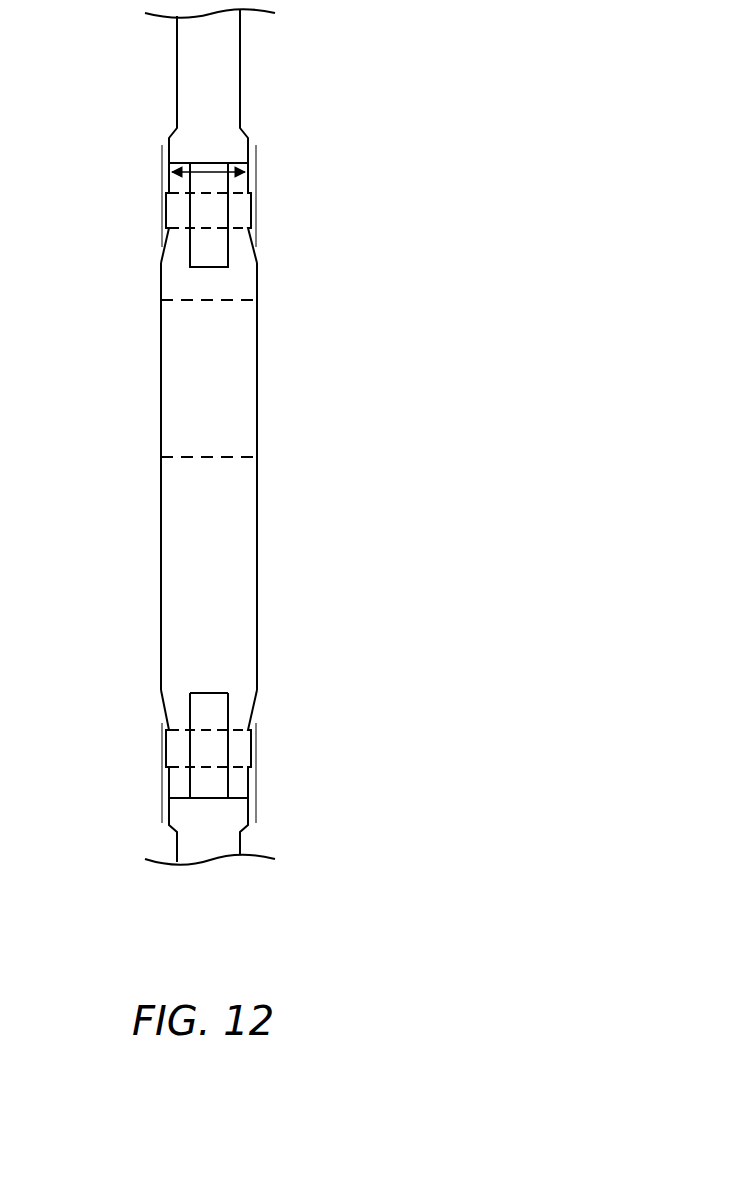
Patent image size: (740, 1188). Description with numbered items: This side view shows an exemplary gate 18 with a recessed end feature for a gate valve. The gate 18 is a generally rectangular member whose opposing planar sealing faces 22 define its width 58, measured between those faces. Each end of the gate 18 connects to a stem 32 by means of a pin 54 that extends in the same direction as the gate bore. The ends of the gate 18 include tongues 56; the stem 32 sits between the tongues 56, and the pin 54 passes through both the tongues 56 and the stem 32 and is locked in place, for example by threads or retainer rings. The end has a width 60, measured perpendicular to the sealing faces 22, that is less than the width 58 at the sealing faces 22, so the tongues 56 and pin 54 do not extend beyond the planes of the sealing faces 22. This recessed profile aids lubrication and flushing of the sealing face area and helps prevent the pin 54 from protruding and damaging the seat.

The gate 18 is at (348, 67).
The stem 32 is at (188, 87).
The sealing faces 22 is at (162, 527).
The pin 54 is at (251, 208).
The tongues 56 is at (176, 181).
The width 58 is at (323, 175).
The width 60 is at (218, 163).